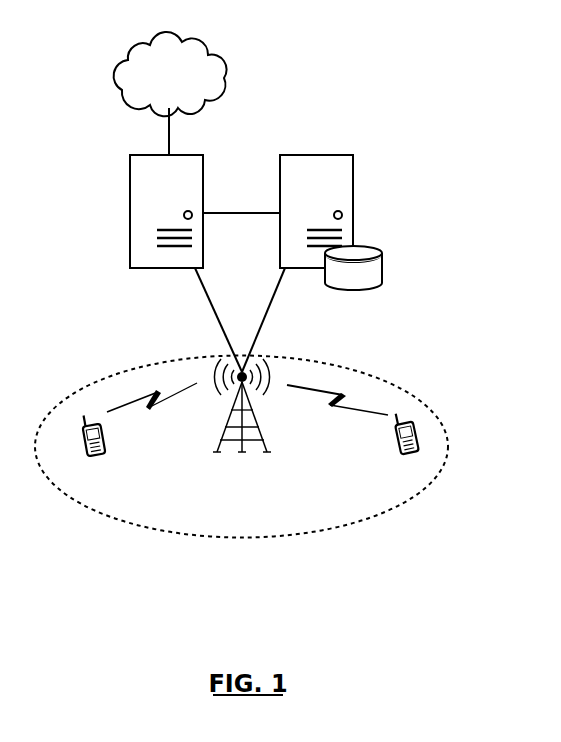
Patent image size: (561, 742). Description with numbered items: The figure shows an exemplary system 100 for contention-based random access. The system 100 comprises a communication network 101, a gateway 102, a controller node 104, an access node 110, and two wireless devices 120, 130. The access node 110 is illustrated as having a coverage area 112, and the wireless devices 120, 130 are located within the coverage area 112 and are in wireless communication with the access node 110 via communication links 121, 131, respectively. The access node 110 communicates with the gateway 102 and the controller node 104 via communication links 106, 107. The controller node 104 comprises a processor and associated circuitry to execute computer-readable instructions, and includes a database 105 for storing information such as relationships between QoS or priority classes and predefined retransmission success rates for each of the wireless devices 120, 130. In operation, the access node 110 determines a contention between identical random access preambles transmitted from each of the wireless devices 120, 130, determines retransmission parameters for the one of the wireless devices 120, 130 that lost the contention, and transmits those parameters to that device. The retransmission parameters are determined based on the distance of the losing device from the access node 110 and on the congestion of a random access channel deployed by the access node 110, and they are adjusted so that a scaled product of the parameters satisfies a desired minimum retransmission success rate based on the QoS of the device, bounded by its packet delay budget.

The system 100 is at (278, 64).
The communication network 101 is at (188, 86).
The gateway 102 is at (131, 210).
The controller node 104 is at (354, 207).
The database 105 is at (390, 261).
The communication link 106 is at (189, 320).
The communication link 107 is at (247, 318).
The access node 110 is at (276, 439).
The coverage area 112 is at (251, 452).
The wireless device 120 is at (376, 446).
The communication link 121 is at (337, 411).
The wireless device 130 is at (123, 448).
The communication link 131 is at (152, 413).